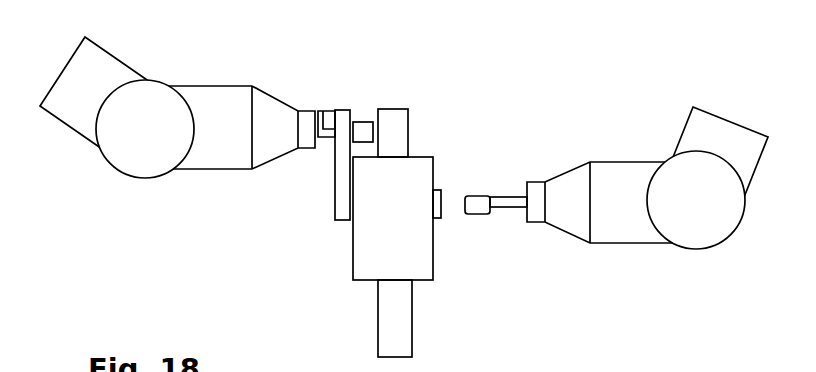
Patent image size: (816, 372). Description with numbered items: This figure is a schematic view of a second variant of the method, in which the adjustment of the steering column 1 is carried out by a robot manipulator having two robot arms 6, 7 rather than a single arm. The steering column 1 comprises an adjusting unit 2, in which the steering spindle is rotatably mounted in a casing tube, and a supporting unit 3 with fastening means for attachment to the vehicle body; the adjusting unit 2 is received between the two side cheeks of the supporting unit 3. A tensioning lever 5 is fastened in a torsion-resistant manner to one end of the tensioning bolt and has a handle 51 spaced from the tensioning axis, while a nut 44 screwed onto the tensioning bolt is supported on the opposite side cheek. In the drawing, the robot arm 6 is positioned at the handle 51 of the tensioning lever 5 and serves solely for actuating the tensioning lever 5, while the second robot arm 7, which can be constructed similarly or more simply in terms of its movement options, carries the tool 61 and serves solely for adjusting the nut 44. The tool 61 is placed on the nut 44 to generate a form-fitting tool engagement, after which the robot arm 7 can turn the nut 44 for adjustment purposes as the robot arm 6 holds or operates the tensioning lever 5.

The steering column 1 is at (415, 84).
The adjusting unit 2 is at (397, 327).
The supporting unit 3 is at (418, 258).
The tensioning lever 5 is at (334, 177).
The robot arm 6 is at (362, 122).
The robot arm 7 is at (512, 197).
The nut 44 is at (437, 190).
The handle 51 is at (327, 111).
The tool 61 is at (473, 196).